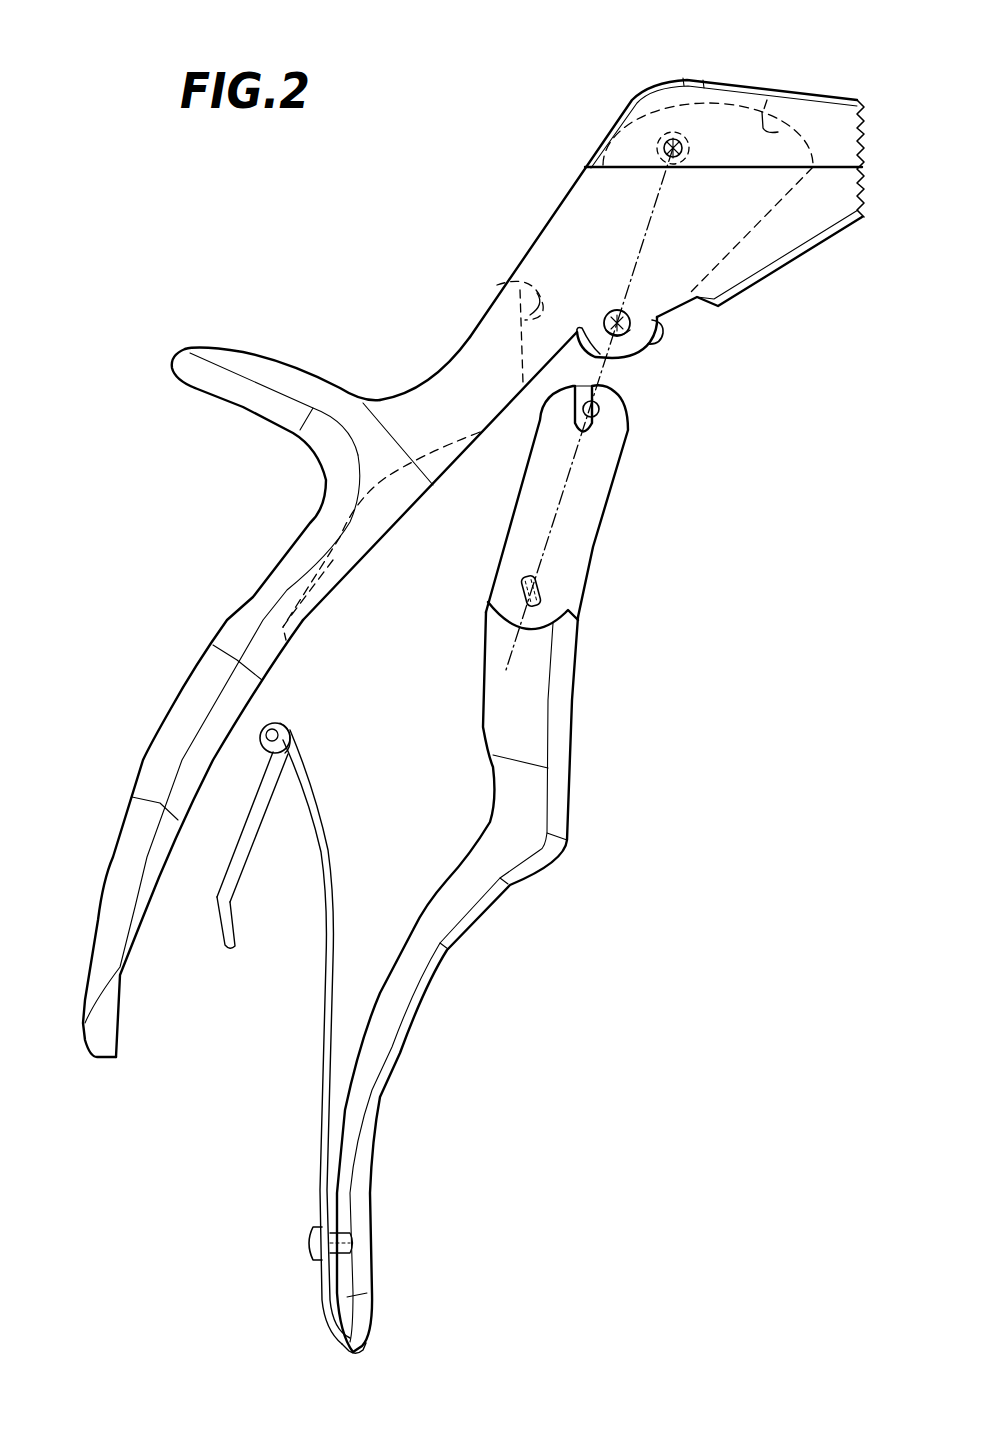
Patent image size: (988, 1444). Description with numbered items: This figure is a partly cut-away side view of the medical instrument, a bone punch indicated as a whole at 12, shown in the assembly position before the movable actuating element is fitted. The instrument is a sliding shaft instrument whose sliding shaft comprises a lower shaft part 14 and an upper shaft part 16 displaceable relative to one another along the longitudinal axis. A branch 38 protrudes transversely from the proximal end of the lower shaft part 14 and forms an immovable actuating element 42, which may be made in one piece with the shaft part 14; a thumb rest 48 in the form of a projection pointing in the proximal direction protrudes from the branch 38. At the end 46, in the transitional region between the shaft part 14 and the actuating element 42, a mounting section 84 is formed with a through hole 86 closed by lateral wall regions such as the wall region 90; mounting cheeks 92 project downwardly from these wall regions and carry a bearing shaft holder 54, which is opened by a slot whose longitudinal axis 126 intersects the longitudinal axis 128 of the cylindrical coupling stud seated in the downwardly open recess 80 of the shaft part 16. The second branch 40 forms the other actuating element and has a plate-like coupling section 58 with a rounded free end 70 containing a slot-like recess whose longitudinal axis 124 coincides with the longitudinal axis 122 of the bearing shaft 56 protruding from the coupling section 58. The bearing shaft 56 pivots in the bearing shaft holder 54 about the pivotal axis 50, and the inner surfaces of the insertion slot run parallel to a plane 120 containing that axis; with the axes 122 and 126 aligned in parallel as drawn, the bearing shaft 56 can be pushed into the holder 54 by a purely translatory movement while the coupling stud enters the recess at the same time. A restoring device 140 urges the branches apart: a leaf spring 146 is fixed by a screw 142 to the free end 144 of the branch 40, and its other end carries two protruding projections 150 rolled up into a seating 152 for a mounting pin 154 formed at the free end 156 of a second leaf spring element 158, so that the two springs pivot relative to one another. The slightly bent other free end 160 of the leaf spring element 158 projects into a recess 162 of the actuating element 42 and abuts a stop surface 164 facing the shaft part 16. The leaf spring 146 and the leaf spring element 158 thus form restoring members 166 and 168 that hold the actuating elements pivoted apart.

The surgical instrument 12 is at (340, 237).
The lower shaft part 14 is at (848, 248).
The shaft part 16 is at (840, 88).
The branch 38 is at (130, 762).
The branch 40 is at (408, 1061).
The actuating element 42 is at (396, 1124).
The end 46 is at (612, 193).
The thumb rest 48 is at (250, 345).
The pivotal axis 50 is at (646, 293).
The bearing shaft holder 54 is at (612, 357).
The bearing shaft 56 is at (522, 590).
The coupling section 58 is at (590, 480).
The free end 70 is at (612, 387).
The recess 80 is at (767, 100).
The mounting section 84 is at (585, 226).
The through hole 86 is at (497, 285).
The wall region 90 is at (558, 258).
The mounting cheek 92 is at (650, 340).
The plane 120 is at (517, 647).
The longitudinal axis 122 is at (557, 523).
The longitudinal axis 124 is at (615, 372).
The longitudinal axis 126 is at (660, 195).
The longitudinal axis 128 is at (674, 140).
The restoring device 140 is at (346, 818).
The screw 142 is at (308, 1238).
The free end 144 is at (377, 1338).
The leaf spring 146 is at (330, 915).
The projections 150 is at (290, 725).
The seating 152 is at (266, 748).
The mounting pin 154 is at (291, 738).
The free end 156 is at (298, 748).
The leaf spring element 158 is at (257, 827).
The free end 160 is at (230, 955).
The recess 162 is at (333, 563).
The stop surface 164 is at (293, 643).
The restoring member 166 is at (314, 1052).
The restoring member 168 is at (208, 909).